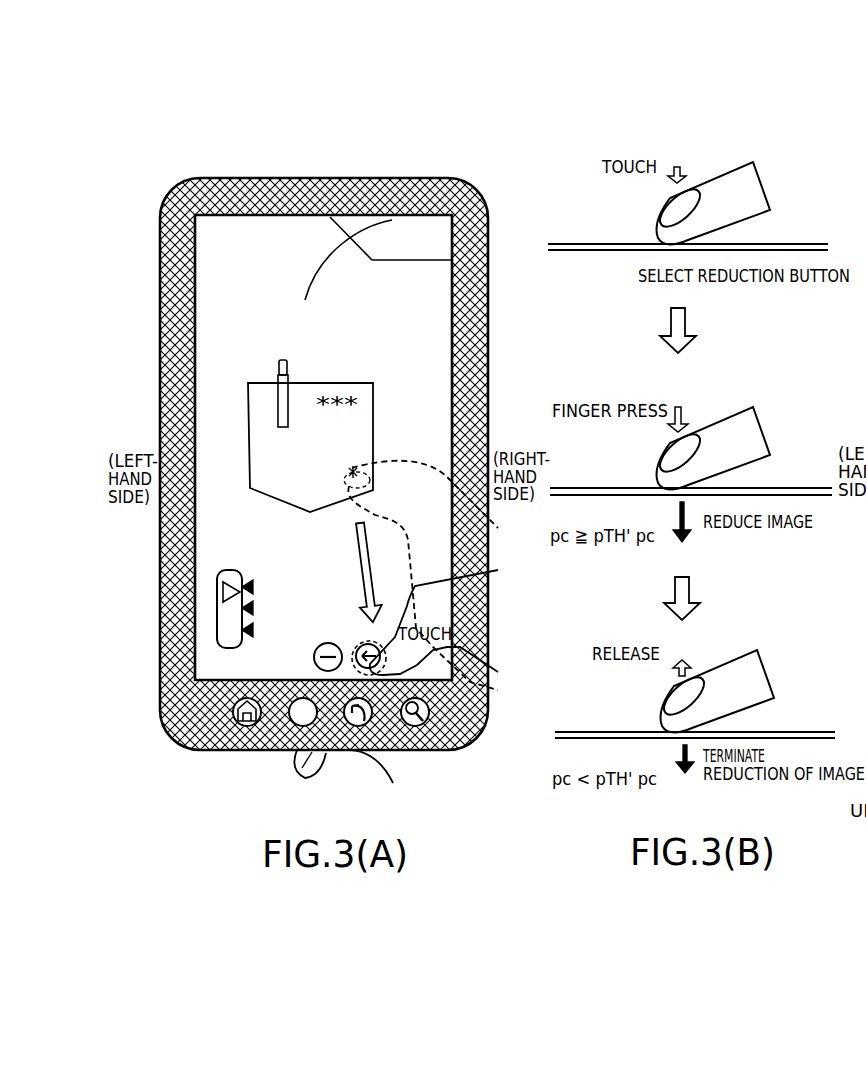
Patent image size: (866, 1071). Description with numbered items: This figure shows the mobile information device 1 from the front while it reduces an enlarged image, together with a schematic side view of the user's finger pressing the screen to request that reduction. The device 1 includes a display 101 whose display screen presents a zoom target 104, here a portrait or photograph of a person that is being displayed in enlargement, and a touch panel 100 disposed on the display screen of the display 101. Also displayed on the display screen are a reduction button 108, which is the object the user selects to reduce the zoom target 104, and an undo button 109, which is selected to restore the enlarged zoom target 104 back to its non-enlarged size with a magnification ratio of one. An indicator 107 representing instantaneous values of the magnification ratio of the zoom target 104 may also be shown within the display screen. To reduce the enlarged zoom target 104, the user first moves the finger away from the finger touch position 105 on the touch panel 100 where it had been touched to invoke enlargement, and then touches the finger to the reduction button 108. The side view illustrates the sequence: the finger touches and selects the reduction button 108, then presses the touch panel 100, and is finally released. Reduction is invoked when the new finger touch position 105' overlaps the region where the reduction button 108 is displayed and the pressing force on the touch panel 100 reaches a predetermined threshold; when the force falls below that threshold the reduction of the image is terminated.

In FIG. 3A, the mobile information device 1 is at (460, 186).
In FIG. 3A, the touch panel 100 is at (202, 235).
In FIG. 3B, the touch panel 100 is at (785, 243).
In FIG. 3A, the display 101 is at (278, 235).
In FIG. 3A, the zoom target 104 is at (380, 218).
In FIG. 3A, the finger touch position 105 is at (397, 419).
In FIG. 3A, the finger touch position 105' is at (463, 738).
In FIG. 3B, the finger touch position 105' is at (623, 277).
In FIG. 3A, the indicator 107 is at (250, 573).
In FIG. 3A, the reduction button 108 is at (363, 660).
In FIG. 3B, the reduction button 108 is at (648, 245).
In FIG. 3A, the undo button 109 is at (313, 663).